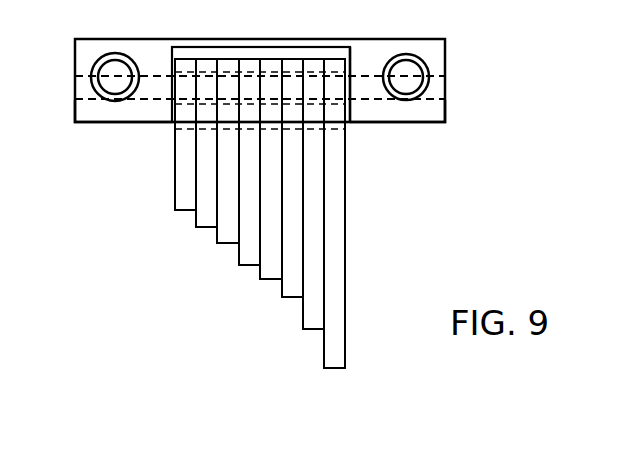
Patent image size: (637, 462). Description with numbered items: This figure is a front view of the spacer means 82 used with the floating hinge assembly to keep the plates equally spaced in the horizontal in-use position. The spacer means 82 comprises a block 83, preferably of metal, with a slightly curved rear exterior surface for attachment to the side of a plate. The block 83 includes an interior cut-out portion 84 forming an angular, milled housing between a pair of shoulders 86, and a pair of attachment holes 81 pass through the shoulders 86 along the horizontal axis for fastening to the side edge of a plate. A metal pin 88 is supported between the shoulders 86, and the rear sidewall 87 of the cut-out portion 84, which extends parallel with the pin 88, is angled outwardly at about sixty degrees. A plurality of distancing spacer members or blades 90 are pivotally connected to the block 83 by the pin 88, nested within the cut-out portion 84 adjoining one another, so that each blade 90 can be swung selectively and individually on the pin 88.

The attachment holes 81 is at (114, 72).
The spacer means 82 is at (358, 203).
The block 83 is at (423, 50).
The interior cut-out portion 84 is at (273, 60).
The shoulders 86 is at (130, 115).
The rear sidewall 87 is at (228, 48).
The pin 88 is at (362, 83).
The blades 90 is at (182, 212).